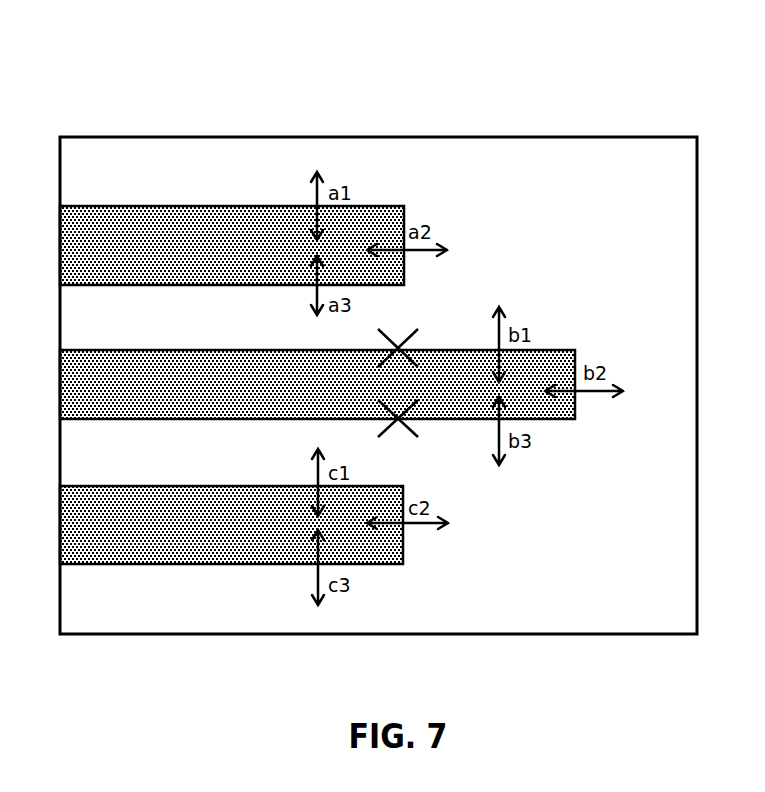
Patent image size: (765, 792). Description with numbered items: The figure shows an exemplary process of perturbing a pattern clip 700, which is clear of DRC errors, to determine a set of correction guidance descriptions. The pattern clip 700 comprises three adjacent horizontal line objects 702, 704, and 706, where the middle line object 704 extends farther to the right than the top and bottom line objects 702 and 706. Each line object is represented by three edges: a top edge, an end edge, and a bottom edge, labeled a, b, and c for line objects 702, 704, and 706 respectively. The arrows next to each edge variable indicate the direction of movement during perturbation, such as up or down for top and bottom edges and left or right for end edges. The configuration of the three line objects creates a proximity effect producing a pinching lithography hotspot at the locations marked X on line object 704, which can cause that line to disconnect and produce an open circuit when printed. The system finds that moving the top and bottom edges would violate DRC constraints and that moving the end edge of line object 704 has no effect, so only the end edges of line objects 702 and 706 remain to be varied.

The pattern clip 700 is at (378, 327).
The top line object 702 is at (395, 206).
The middle line object 704 is at (570, 350).
The bottom line object 706 is at (393, 486).